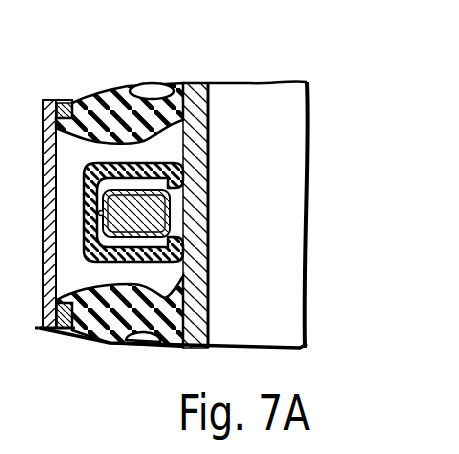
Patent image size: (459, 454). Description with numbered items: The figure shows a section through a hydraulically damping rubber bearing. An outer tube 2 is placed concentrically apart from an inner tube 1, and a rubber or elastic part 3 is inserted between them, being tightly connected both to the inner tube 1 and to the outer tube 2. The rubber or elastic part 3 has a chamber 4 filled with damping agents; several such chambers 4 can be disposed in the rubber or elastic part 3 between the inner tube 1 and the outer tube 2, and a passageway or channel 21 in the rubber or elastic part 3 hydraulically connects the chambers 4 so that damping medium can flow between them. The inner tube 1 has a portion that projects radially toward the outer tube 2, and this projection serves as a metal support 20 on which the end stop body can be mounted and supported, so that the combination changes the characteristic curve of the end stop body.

The inner tube 1 is at (208, 125).
The outer tube 2 is at (50, 100).
The rubber or elastic part 3 is at (142, 72).
The chamber 4 is at (118, 350).
The metal support 20 is at (145, 212).
The passageway or channel 21 is at (163, 82).